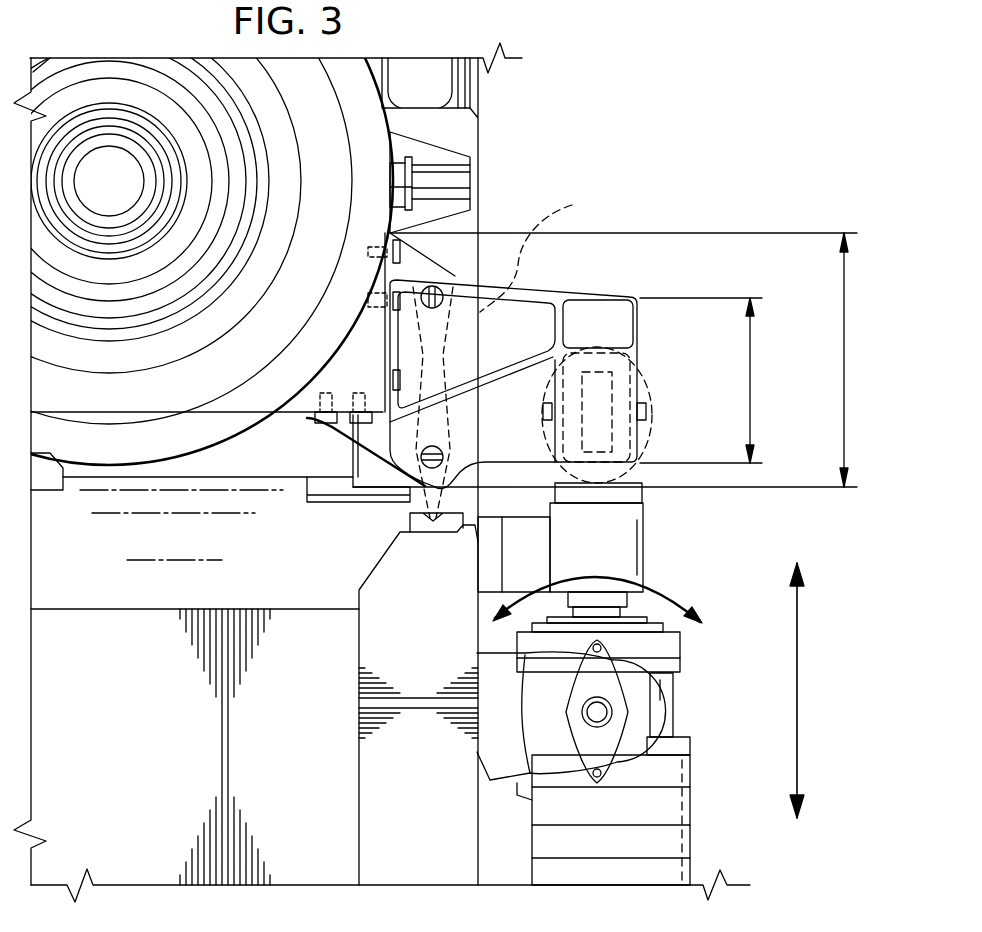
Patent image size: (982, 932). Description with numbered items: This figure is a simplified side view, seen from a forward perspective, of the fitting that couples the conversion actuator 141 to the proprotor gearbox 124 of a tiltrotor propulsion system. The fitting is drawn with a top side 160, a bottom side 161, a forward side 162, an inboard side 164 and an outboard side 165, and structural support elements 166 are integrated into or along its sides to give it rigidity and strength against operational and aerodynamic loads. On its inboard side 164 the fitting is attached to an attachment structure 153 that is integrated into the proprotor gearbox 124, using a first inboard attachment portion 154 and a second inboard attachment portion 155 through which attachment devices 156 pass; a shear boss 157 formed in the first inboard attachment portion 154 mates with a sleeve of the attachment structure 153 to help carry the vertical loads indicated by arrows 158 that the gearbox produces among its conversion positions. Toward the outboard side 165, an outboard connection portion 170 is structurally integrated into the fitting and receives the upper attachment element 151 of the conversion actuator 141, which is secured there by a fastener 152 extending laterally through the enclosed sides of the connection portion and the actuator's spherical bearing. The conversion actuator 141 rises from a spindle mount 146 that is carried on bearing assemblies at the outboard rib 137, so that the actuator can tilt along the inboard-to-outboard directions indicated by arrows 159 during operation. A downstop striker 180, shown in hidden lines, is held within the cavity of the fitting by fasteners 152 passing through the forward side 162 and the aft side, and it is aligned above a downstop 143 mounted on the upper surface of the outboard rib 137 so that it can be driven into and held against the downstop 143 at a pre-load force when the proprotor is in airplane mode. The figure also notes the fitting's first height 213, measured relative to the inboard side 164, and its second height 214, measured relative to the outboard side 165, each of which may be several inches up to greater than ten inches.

The proprotor gearbox 124 is at (445, 130).
The outboard rib 137 is at (495, 871).
The conversion actuator 141 is at (748, 838).
The downstop 143 is at (420, 537).
The spindle mount 146 is at (672, 710).
The upper attachment element 151 is at (645, 532).
The fastener 152 is at (435, 290).
The attachment structure 153 is at (298, 405).
The first inboard attachment portion 154 is at (390, 290).
The second inboard attachment portion 155 is at (336, 425).
The attachment device 156 is at (400, 312).
The shear boss 157 is at (365, 320).
The arrows indicating vertical loads 158 is at (800, 692).
The arrows indicating inboard-to-outboard tilt 159 is at (688, 586).
The top side 160 is at (638, 283).
The bottom side 161 is at (528, 482).
The forward side 162 is at (535, 310).
The inboard side 164 is at (333, 375).
The outboard side 165 is at (648, 349).
The structural support element 166 is at (578, 322).
The outboard connection portion 170 is at (648, 405).
The downstop striker 180 is at (547, 249).
The first height 213 is at (846, 360).
The second height 214 is at (752, 375).